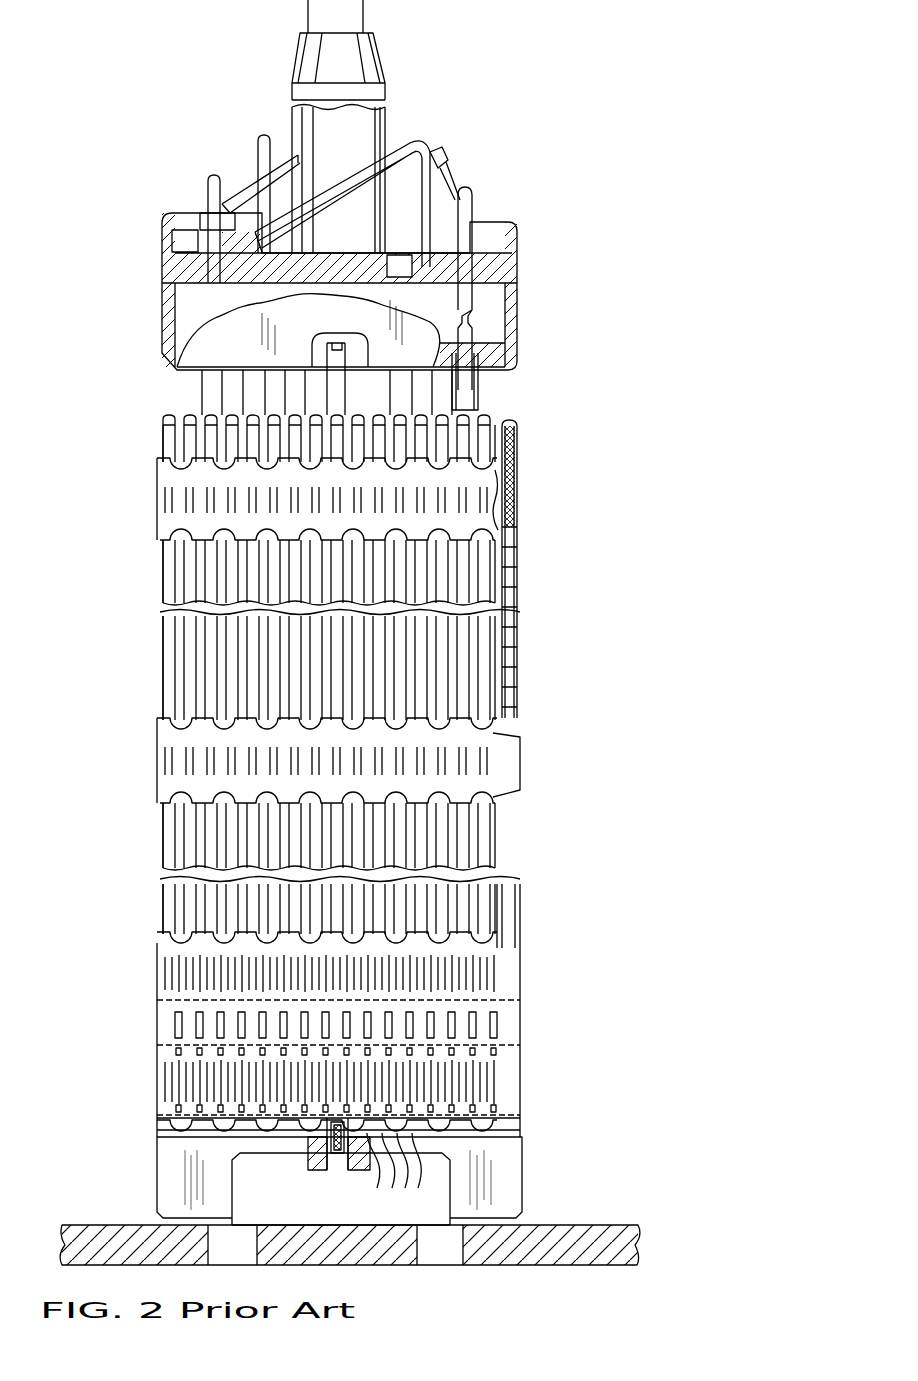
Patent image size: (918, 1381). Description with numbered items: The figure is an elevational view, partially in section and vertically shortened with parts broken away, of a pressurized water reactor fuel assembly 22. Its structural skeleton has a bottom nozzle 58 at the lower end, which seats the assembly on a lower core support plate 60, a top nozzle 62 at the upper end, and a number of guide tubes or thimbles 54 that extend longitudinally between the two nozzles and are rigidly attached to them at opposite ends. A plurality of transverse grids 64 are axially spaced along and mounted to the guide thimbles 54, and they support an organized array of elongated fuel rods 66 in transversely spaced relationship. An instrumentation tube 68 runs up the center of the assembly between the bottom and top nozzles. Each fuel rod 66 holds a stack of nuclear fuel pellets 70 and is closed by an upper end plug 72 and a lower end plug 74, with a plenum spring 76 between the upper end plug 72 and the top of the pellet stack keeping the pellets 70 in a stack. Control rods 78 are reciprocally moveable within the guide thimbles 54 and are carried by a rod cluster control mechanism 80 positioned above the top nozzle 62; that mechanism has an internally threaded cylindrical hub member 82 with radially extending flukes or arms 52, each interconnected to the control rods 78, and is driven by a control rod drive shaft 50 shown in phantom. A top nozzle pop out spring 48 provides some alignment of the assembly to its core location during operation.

The fuel assembly 22 is at (362, 612).
The top nozzle pop out spring 48 is at (443, 173).
The control rod drive shaft 50 is at (363, 5).
The radially extending flukes or arms 52 is at (243, 187).
The guide tubes or thimbles 54 is at (200, 397).
The bottom nozzle 58 is at (525, 1172).
The lower core support plate 60 is at (560, 1225).
The top nozzle 62 is at (522, 268).
The transverse grids 64 is at (158, 512).
The fuel rods 66 is at (160, 674).
The instrumentation tube 68 is at (346, 1172).
The nuclear fuel pellets 70 is at (510, 577).
The upper end plug 72 is at (517, 422).
The lower end plug 74 is at (397, 1187).
The plenum spring 76 is at (517, 485).
The control rods 78 is at (503, 340).
The rod cluster control mechanism 80 is at (430, 137).
The internally threaded cylindrical hub member 82 is at (383, 128).